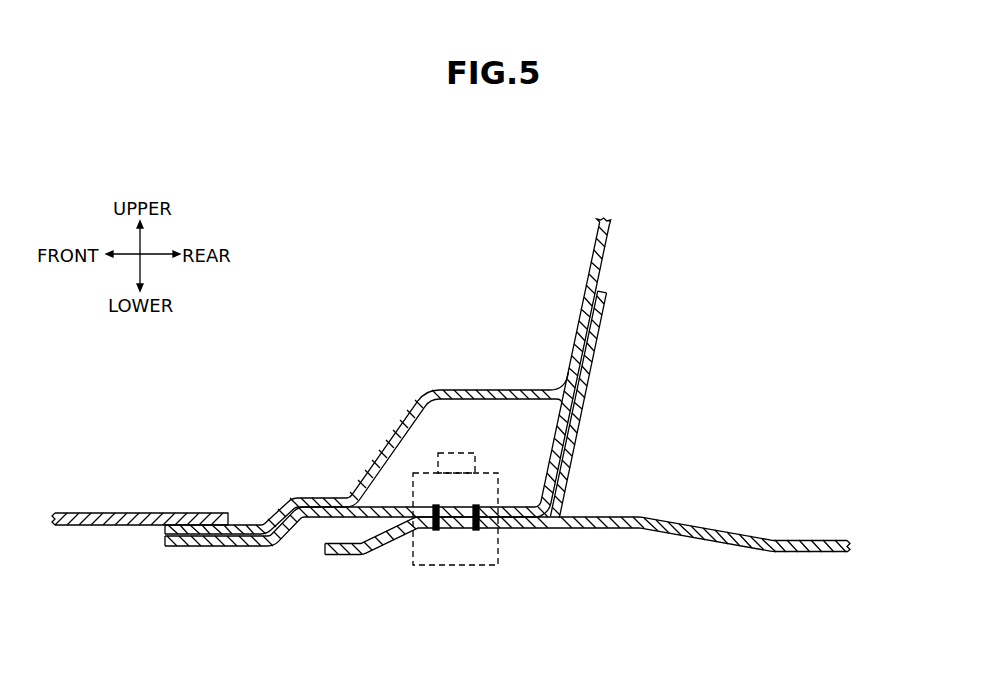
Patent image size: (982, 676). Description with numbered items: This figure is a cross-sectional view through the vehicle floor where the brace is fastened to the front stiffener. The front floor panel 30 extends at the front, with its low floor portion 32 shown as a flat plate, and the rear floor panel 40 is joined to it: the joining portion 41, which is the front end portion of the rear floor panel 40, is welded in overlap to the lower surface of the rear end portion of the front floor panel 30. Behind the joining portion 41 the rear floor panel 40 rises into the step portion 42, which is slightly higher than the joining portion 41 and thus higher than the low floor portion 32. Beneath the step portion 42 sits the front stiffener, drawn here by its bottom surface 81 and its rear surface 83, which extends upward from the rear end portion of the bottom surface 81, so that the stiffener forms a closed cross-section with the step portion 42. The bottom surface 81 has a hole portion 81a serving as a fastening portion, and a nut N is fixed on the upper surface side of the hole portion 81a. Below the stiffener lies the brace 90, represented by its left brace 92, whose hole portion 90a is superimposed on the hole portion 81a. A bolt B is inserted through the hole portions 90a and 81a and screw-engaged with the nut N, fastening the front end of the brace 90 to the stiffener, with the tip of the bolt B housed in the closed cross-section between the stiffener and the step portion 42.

The front floor panel 30 is at (140, 555).
The low floor portion 32 is at (88, 527).
The rear floor panel 40 is at (367, 423).
The joining portion 41 is at (240, 524).
The step portion 42 is at (477, 389).
The bottom surface 81 is at (388, 382).
The hole portion 81a is at (474, 505).
The rear surface 83 is at (579, 441).
The brace 90 is at (587, 567).
The left brace 92 is at (587, 536).
The hole portion 90a is at (445, 531).
The bolt B is at (467, 566).
The nut N is at (427, 453).